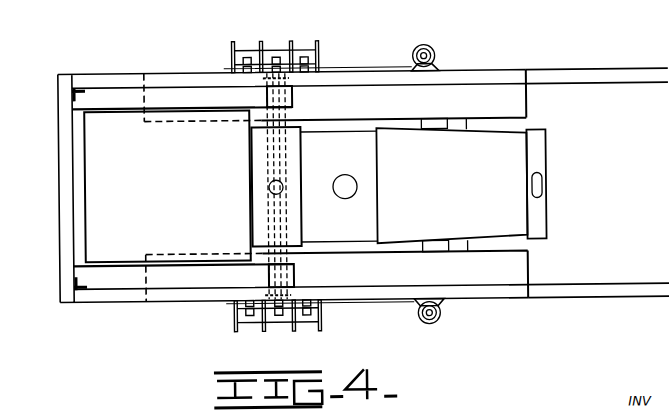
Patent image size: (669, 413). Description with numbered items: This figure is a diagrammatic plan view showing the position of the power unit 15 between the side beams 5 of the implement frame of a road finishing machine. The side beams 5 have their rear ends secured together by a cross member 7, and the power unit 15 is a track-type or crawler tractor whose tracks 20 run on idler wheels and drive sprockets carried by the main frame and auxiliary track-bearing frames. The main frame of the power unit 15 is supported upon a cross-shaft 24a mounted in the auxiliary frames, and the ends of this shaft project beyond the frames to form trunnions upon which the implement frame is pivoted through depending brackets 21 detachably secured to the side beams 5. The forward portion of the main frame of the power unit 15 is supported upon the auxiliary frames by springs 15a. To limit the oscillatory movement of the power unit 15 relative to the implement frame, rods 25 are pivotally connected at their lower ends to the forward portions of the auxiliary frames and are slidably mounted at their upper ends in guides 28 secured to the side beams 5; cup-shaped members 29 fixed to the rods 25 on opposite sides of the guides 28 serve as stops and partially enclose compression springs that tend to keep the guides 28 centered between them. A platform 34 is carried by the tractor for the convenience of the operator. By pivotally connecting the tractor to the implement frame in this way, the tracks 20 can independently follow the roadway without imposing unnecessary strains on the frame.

The side beams 5 is at (660, 284).
The cross member 7 is at (63, 231).
The power unit 15 is at (405, 142).
The springs 15a is at (448, 125).
The tracks 20 is at (520, 100).
The depending brackets 21 is at (270, 50).
The cross-shaft 24a is at (283, 223).
The rods 25 is at (424, 45).
The guides 28 is at (414, 69).
The cup-shaped members 29 is at (436, 52).
The platform 34 is at (100, 167).